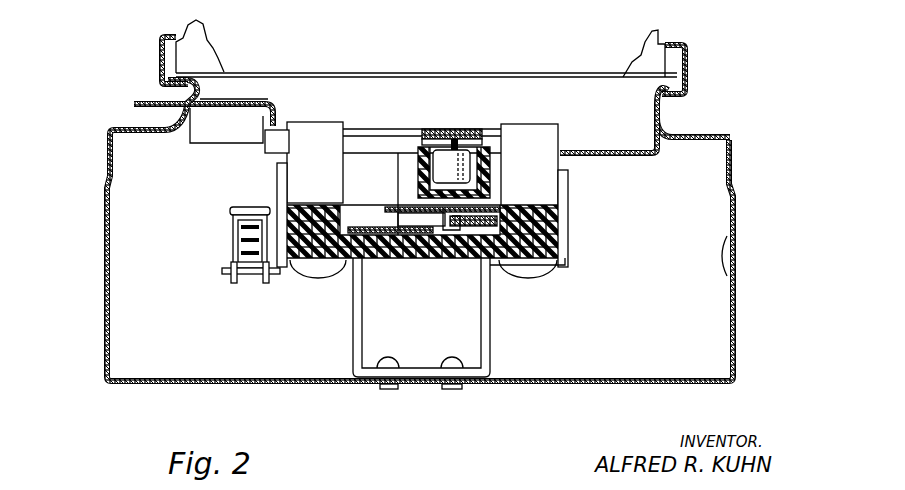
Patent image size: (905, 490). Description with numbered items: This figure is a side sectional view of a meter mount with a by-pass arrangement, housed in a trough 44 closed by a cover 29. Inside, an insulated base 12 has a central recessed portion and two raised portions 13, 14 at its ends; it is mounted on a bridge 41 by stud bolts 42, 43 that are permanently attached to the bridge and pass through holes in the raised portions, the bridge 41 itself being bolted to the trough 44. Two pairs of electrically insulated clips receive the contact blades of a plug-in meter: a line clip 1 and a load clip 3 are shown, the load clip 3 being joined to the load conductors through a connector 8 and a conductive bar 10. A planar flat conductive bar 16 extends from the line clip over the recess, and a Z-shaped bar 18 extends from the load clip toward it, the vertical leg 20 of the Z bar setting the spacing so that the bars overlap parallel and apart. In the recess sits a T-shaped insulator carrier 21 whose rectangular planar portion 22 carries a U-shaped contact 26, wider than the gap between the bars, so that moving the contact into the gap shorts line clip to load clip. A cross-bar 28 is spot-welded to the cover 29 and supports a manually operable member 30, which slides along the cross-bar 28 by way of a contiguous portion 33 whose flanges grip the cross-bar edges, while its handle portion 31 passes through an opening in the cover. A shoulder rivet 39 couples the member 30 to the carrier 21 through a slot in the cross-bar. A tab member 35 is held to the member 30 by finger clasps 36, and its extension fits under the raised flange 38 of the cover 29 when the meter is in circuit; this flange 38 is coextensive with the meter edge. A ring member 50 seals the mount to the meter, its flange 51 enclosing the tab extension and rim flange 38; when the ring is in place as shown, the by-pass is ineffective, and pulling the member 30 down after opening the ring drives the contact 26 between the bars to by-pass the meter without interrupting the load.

The clip 1 is at (513, 138).
The clip 3 is at (302, 140).
The connector 8 is at (233, 238).
The conductive bar 10 is at (272, 280).
The insulated base 12 is at (568, 243).
The raised portion 13 is at (568, 198).
The raised portion 14 is at (277, 175).
The flat conductive bar 16 is at (503, 208).
The Z-shaped conductive bar 18 is at (358, 230).
The vertical leg 20 is at (345, 208).
The insulator carrier 21 is at (408, 160).
The rectangular planar portion 22 is at (397, 257).
The U-shaped contact 26 is at (470, 238).
The cross-bar 28 is at (625, 158).
The cover 29 is at (690, 135).
The manually operable member 30 is at (140, 99).
The handle portion 31 is at (168, 110).
The contiguous portion 33 is at (424, 130).
The tab member 35 is at (202, 100).
The finger clasp 36 is at (270, 132).
The flange 38 is at (687, 52).
The shoulder rivet 39 is at (478, 128).
The bridge 41 is at (492, 340).
The stud bolt 42 is at (321, 277).
The stud bolt 43 is at (528, 272).
The trough 44 is at (737, 273).
The ring member 50 is at (162, 44).
The flange 51 is at (178, 88).